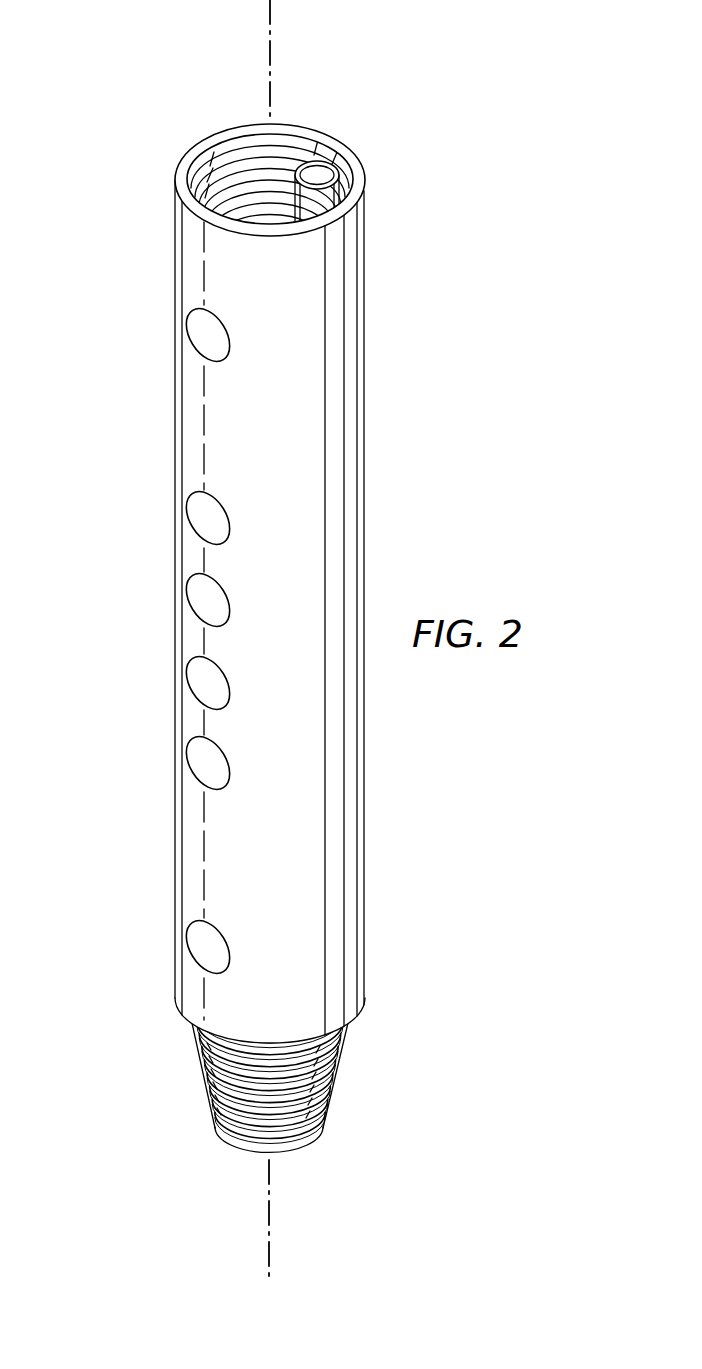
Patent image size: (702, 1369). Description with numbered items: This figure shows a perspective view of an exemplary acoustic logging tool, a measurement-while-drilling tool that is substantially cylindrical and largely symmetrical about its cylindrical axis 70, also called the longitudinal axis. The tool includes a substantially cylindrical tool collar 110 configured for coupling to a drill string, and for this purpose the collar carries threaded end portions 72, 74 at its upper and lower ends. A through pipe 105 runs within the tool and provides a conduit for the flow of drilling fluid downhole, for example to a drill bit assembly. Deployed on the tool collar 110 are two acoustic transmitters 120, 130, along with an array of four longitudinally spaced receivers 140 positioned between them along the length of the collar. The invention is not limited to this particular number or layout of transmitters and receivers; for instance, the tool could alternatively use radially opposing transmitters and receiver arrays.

The cylindrical axis 70 is at (272, 60).
The threaded end portion 72 is at (232, 144).
The threaded end portion 74 is at (206, 1085).
The through pipe 105 is at (323, 168).
The tool collar 110 is at (174, 869).
The acoustic transmitter 120 is at (217, 922).
The acoustic transmitter 130 is at (224, 360).
The receivers 140 is at (167, 492).